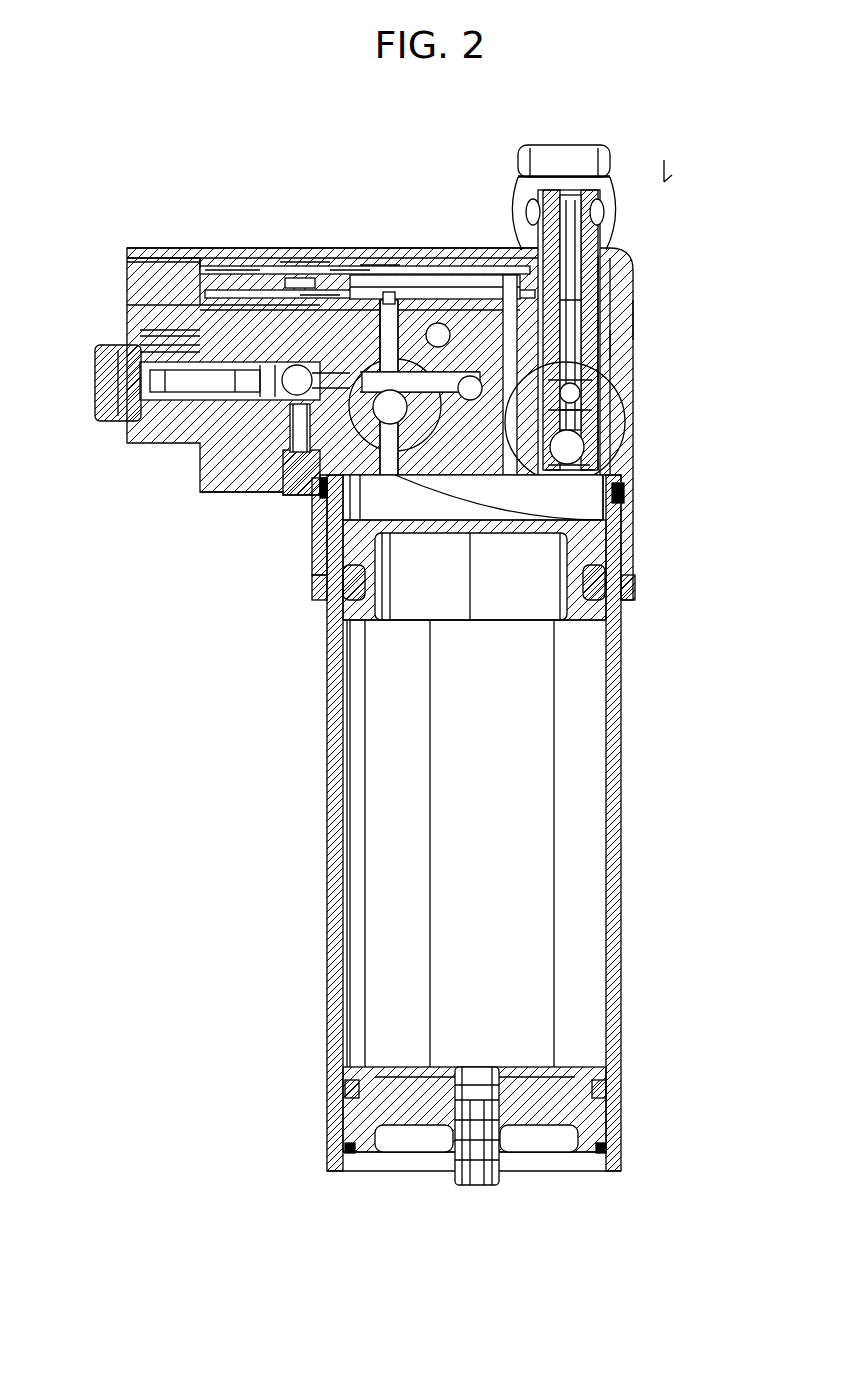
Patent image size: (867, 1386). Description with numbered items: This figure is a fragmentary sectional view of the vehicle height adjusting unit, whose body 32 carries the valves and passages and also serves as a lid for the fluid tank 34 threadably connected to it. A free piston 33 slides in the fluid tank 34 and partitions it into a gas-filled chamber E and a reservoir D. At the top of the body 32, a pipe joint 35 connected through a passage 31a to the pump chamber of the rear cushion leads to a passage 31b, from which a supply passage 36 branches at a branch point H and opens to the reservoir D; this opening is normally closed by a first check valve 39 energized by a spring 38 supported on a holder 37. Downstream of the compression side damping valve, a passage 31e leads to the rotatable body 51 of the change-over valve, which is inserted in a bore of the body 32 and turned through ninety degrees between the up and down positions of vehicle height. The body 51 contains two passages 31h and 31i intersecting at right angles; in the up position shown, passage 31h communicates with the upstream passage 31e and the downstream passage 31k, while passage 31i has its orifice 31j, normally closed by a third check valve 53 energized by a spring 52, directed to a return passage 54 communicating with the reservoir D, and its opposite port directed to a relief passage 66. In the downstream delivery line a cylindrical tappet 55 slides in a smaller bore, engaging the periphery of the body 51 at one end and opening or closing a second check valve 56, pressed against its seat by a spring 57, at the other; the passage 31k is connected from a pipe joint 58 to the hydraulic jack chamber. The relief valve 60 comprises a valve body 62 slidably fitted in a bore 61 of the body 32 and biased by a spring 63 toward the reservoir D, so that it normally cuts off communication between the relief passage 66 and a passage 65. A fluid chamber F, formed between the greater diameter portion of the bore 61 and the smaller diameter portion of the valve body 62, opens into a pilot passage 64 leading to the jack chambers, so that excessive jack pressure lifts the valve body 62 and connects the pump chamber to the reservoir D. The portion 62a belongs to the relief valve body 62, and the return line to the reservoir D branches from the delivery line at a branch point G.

The passage 31a is at (674, 170).
The passage 31b is at (640, 348).
The passage 31e is at (508, 300).
The passage 31h is at (416, 300).
The passage 31i is at (320, 495).
The orifice 31j is at (325, 520).
The passage 31k is at (210, 484).
The body 32 is at (636, 320).
The free piston 33 is at (342, 607).
The fluid tank 34 is at (328, 843).
The pipe joint 35 is at (620, 210).
The supply passage 36 is at (586, 447).
The holder 37 is at (602, 302).
The spring 38 is at (583, 395).
The first check valve 39 is at (580, 464).
The rotatable body 51 is at (590, 480).
The spring 52 is at (322, 290).
The third check valve 53 is at (595, 478).
The passage 54 is at (335, 565).
The tappet 55 is at (160, 378).
The second check valve 56 is at (298, 468).
The spring 57 is at (215, 452).
The pipe joint 58 is at (300, 345).
The relief valve 60 is at (268, 236).
The bore 61 is at (298, 275).
The valve body 62 is at (352, 290).
The plate portion 62a is at (262, 272).
The spring 63 is at (210, 250).
The pilot passage 64 is at (310, 356).
The passage 65 is at (440, 300).
The relief passage 66 is at (372, 272).
The reservoir D is at (465, 508).
The chamber E is at (484, 734).
The fluid chamber F is at (300, 280).
The branch point G is at (392, 300).
The branch point H is at (628, 400).